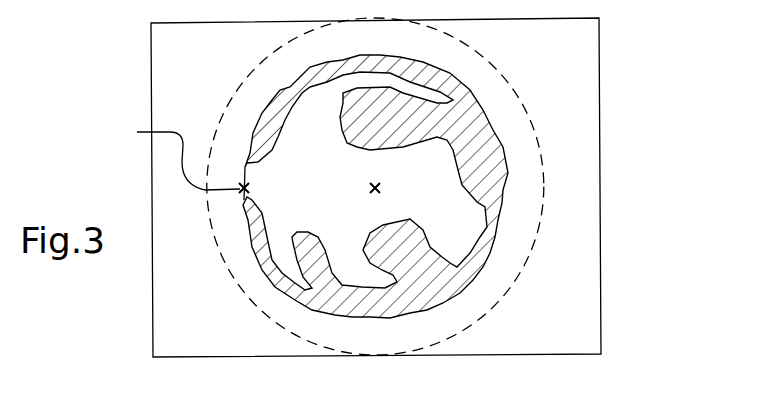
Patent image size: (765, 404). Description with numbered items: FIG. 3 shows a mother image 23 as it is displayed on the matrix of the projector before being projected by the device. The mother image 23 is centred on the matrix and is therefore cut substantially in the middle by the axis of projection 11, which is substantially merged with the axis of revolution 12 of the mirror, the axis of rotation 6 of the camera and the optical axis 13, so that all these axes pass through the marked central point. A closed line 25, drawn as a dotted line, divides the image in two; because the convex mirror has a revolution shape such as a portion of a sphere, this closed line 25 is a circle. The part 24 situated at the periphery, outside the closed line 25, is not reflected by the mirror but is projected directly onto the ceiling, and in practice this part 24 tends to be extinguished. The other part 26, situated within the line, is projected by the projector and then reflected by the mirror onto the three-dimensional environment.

The axis of rotation 6 is at (330, 200).
The axis of projection 11 is at (330, 200).
The axis of revolution 12 is at (330, 200).
The optical axis 13 is at (370, 188).
The mother image 23 is at (391, 206).
The part of the mother image 24 is at (590, 232).
The closed line 25 is at (517, 275).
The other part of the mother image 26 is at (447, 327).